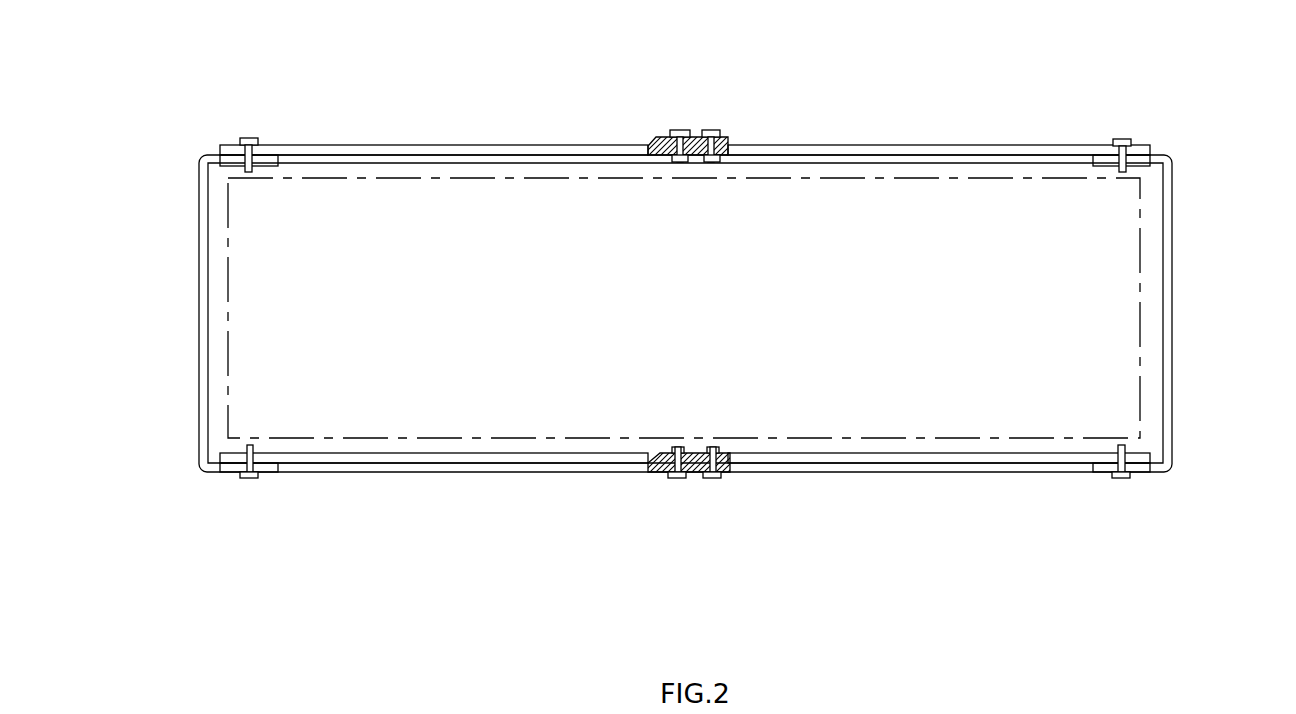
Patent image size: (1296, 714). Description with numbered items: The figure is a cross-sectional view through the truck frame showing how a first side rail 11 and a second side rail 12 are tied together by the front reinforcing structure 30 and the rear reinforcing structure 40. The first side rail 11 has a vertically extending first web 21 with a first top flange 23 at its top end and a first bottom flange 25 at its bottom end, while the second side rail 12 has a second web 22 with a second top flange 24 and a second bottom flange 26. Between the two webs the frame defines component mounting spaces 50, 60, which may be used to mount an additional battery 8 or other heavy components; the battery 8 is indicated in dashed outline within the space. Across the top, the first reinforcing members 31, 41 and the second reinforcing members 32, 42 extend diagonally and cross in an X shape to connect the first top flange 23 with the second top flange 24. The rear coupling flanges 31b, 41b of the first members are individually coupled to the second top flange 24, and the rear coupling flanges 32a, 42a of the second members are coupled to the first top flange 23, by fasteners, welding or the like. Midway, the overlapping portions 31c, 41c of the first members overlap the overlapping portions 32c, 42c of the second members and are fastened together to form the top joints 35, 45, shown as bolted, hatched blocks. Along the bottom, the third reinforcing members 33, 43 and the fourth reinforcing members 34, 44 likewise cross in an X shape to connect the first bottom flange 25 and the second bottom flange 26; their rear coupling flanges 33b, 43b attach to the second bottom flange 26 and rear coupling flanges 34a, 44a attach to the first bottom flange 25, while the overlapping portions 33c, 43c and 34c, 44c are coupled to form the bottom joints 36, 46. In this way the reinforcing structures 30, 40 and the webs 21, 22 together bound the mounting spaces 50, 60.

The additional battery 8 is at (1141, 417).
The first side rail 11 is at (968, 348).
The second side rail 12 is at (395, 348).
The first web 21 is at (1168, 315).
The second web 22 is at (200, 332).
The first top flange 23 is at (1141, 166).
The second top flange 24 is at (197, 166).
The first bottom flange 25 is at (1143, 478).
The second bottom flange 26 is at (230, 478).
The front reinforcing structure 30 is at (684, 310).
The rear reinforcing structure 40 is at (567, 91).
The first front reinforcing member 31 is at (409, 117).
The first rear reinforcing member 41 is at (435, 145).
The rear coupling flange 31b is at (224, 117).
The rear coupling flange 41b is at (232, 145).
The overlapping portion 31c is at (751, 87).
The overlapping portion 41c is at (725, 135).
The second front reinforcing member 32 is at (939, 117).
The second rear reinforcing member 42 is at (925, 145).
The rear coupling flange 32a is at (1094, 117).
The rear coupling flange 42a is at (1105, 146).
The overlapping portion 32c is at (700, 181).
The overlapping portion 42c is at (693, 163).
The third front reinforcing member 33 is at (360, 501).
The third rear reinforcing member 43 is at (450, 465).
The rear coupling flange 33b is at (175, 461).
The rear coupling flange 43b is at (233, 453).
The overlapping portion 33c is at (755, 527).
The overlapping portion 43c is at (723, 477).
The fourth front reinforcing member 34 is at (1011, 500).
The fourth rear reinforcing member 44 is at (905, 465).
The rear coupling flange 34a is at (1194, 460).
The rear coupling flange 44a is at (1141, 444).
The overlapping portion 34c is at (698, 434).
The overlapping portion 44c is at (693, 450).
The top joint 35 is at (724, 122).
The top joint 45 is at (724, 122).
The bottom joint 36 is at (727, 499).
The bottom joint 46 is at (727, 499).
The front-side component mounting space 50 is at (684, 308).
The component mounting space 60 is at (722, 317).